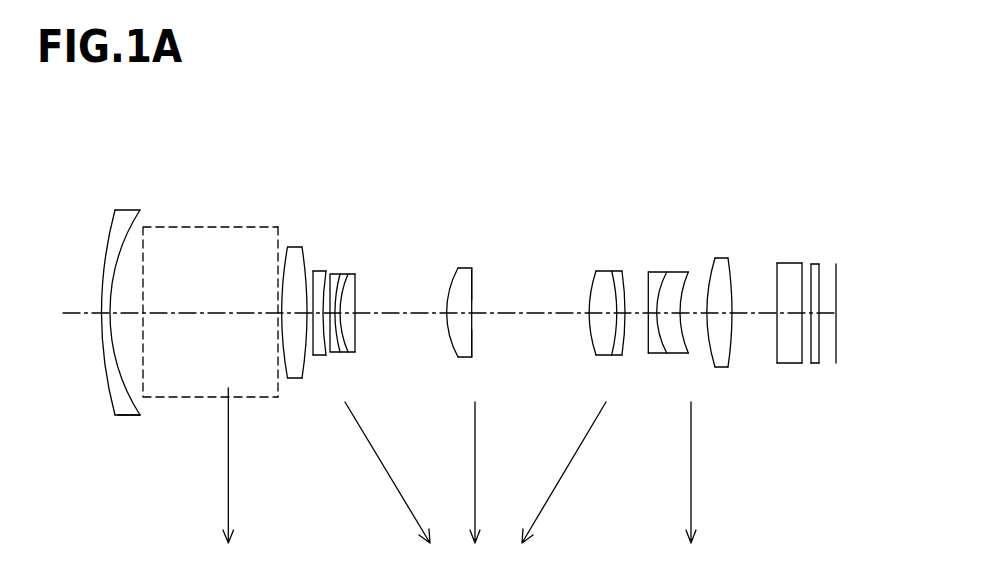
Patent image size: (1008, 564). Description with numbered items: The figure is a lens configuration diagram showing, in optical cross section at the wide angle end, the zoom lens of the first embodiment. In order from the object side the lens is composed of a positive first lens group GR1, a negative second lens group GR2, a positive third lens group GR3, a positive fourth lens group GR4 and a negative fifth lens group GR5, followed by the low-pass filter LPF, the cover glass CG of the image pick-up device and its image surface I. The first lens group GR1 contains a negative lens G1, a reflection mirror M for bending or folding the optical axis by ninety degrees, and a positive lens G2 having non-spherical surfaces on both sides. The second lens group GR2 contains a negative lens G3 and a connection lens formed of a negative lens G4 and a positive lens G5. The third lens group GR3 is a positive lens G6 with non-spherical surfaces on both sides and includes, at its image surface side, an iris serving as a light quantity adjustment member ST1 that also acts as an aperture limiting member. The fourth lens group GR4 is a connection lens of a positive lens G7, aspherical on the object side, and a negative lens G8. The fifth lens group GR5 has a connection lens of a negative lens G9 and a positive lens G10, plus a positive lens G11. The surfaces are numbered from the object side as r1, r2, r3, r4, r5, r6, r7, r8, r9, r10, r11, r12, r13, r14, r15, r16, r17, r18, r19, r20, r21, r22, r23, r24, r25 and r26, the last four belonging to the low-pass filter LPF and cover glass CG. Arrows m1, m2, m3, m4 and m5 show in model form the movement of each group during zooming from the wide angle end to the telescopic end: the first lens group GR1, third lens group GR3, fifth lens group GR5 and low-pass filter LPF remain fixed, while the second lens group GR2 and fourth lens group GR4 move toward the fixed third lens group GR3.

The first lens group GR1 is at (302, 133).
The second lens group GR2 is at (388, 133).
The third lens group GR3 is at (495, 133).
The fourth lens group GR4 is at (640, 133).
The fifth lens group GR5 is at (747, 133).
The negative lens G1 is at (118, 294).
The positive lens G2 is at (293, 261).
The negative lens G3 is at (327, 249).
The negative lens G4 is at (354, 248).
The positive lens G5 is at (374, 248).
The positive lens G6 is at (469, 250).
The positive lens G7 is at (590, 249).
The negative lens G8 is at (639, 249).
The negative lens G9 is at (650, 275).
The positive lens G10 is at (693, 269).
The positive lens G11 is at (730, 255).
The low-pass filter LPF is at (791, 275).
The cover glass CG is at (819, 353).
The image surface I is at (836, 338).
The light quantity adjustment member ST1 is at (482, 343).
The reflection mirror M is at (198, 383).
The first plane surface r1 is at (105, 260).
The second plane surface r2 is at (127, 247).
The third plane surface r3 is at (148, 377).
The fourth plane surface r4 is at (273, 378).
The fifth plane surface r5 is at (286, 247).
The sixth plane surface r6 is at (301, 247).
The seventh plane surface r7 is at (320, 271).
The eighth plane surface r8 is at (327, 275).
The ninth plane surface r9 is at (340, 281).
The tenth plane surface r10 is at (352, 277).
The eleventh plane surface r11 is at (357, 281).
The twelfth plane surface r12 is at (452, 287).
The thirteenth plane surface r13 is at (470, 268).
The fourteenth plane surface r14 is at (482, 278).
The fifteenth plane surface r15 is at (592, 277).
The sixteenth plane surface r16 is at (612, 280).
The seventeenth plane surface r17 is at (623, 280).
The eighteenth plane surface r18 is at (647, 345).
The nineteenth plane surface r19 is at (662, 352).
The twentieth plane surface r20 is at (688, 350).
The twenty-first plane surface r21 is at (712, 270).
The twenty-second plane surface r22 is at (728, 258).
The twenty-third plane surface r23 is at (775, 363).
The twenty-fourth plane surface r24 is at (803, 363).
The twenty-fifth plane surface r25 is at (811, 264).
The twenty-sixth plane surface r26 is at (822, 268).
The arrow m1 is at (230, 482).
The arrow m2 is at (398, 492).
The arrow m3 is at (477, 482).
The arrow m4 is at (553, 490).
The arrow m5 is at (693, 482).